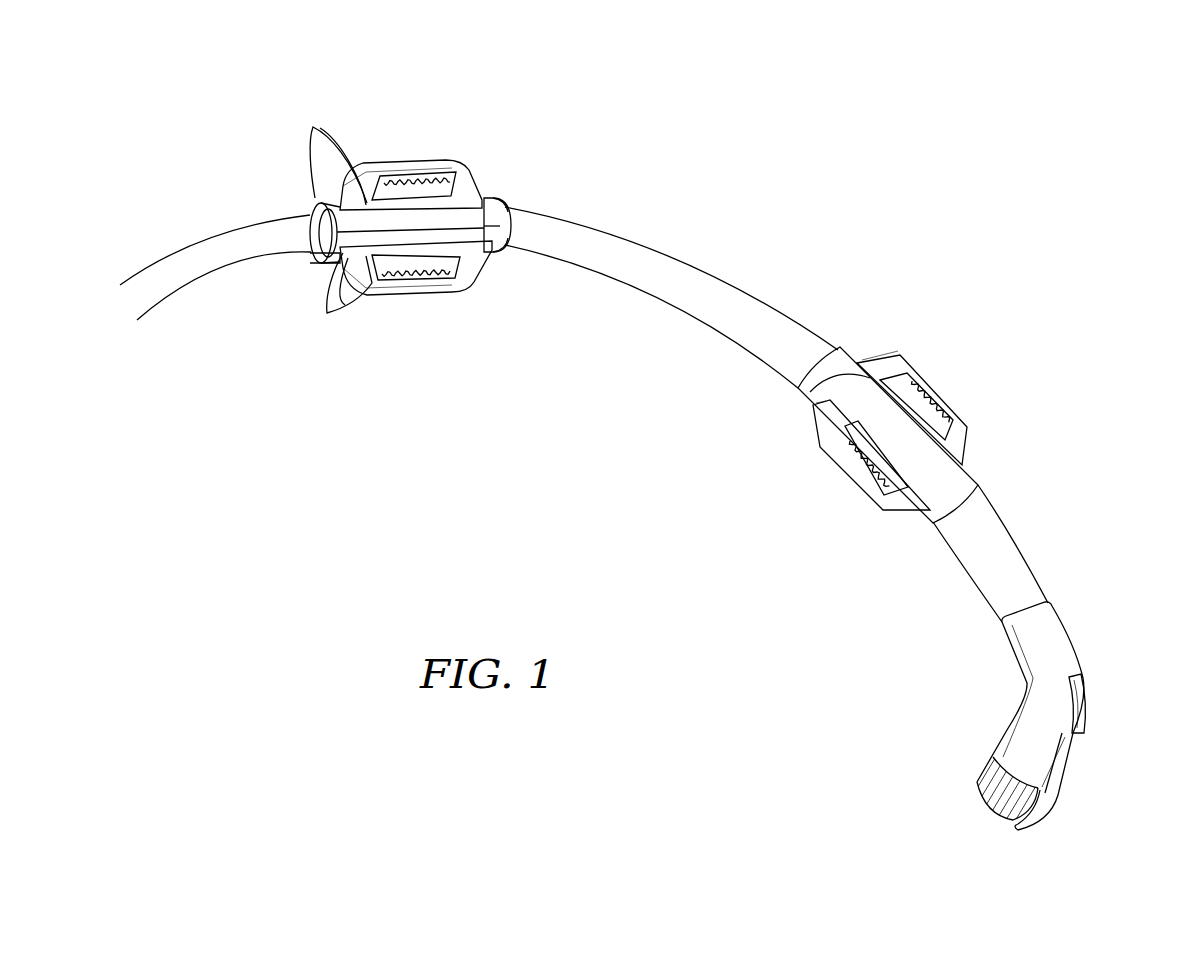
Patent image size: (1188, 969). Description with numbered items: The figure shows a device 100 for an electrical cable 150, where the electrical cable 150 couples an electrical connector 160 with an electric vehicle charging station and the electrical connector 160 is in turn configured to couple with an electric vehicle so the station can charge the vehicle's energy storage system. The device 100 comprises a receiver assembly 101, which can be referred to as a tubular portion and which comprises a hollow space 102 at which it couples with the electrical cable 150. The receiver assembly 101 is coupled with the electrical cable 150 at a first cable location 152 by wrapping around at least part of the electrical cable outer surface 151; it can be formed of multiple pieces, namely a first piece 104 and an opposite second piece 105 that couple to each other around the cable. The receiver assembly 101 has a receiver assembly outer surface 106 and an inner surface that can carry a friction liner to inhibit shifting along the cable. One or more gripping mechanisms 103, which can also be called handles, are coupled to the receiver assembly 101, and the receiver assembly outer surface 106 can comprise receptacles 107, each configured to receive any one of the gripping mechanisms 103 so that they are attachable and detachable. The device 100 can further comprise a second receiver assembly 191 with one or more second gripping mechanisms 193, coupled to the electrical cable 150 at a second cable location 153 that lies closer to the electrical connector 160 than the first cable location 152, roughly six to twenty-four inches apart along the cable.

The device 100 is at (471, 531).
The receiver assembly 101 is at (424, 231).
The hollow space 102 is at (303, 232).
The gripping mechanisms 103 is at (345, 304).
The first piece 104 is at (485, 192).
The second piece 105 is at (513, 258).
The receiver assembly outer surface 106 is at (507, 205).
The receptacles 107 is at (384, 228).
The electrical cable 150 is at (756, 272).
The electrical cable outer surface 151 is at (653, 260).
The first cable location 152 is at (409, 128).
The second cable location 153 is at (970, 350).
The electrical connector 160 is at (1057, 645).
The second receiver assembly 191 is at (824, 501).
The second gripping mechanisms 193 is at (838, 440).